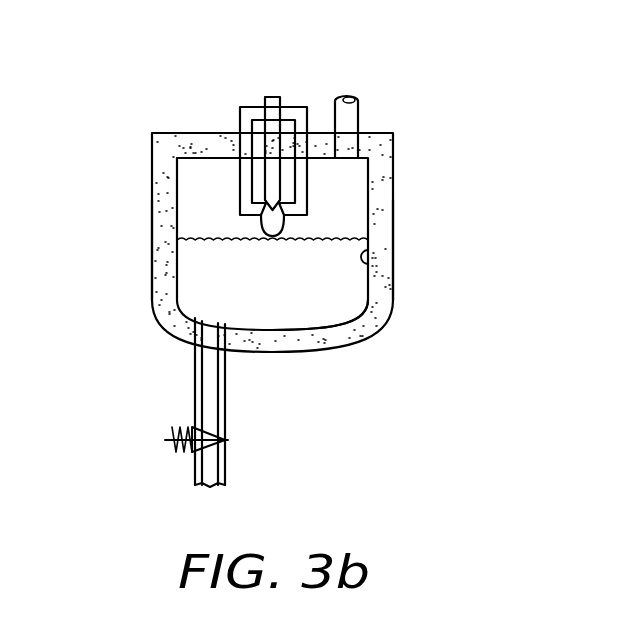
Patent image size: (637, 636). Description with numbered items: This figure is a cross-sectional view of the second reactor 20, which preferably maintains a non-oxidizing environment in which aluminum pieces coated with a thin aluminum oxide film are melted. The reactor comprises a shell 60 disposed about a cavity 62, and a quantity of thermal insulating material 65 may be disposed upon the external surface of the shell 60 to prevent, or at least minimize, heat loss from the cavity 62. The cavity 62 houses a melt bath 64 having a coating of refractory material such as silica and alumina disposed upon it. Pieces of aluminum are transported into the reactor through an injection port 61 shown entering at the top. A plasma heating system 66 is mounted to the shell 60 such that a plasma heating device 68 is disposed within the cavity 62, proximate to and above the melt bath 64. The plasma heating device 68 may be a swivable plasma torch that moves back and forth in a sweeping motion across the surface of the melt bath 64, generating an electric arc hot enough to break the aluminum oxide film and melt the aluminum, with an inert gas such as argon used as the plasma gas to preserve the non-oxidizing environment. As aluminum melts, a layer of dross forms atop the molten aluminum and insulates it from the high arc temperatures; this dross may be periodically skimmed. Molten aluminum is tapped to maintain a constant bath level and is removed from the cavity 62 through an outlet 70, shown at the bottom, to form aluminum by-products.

The second reactor 20 is at (400, 200).
The shell 60 is at (152, 262).
The injection port 61 is at (346, 90).
The cavity 62 is at (367, 320).
The melt bath 64 is at (372, 255).
The thermal insulating material 65 is at (393, 280).
The plasma heating system 66 is at (233, 121).
The plasma heating device 68 is at (265, 204).
The outlet 70 is at (184, 395).